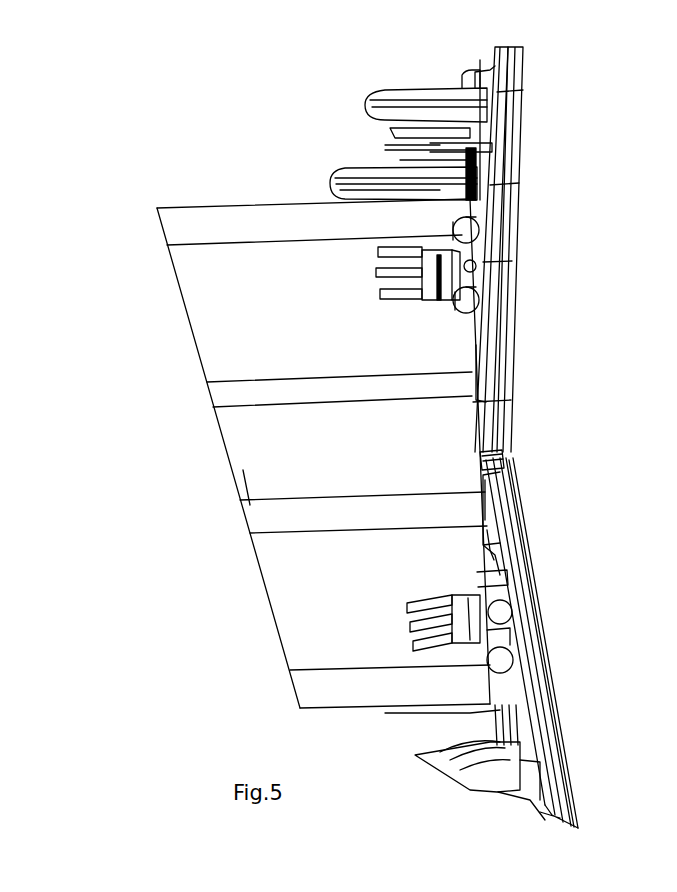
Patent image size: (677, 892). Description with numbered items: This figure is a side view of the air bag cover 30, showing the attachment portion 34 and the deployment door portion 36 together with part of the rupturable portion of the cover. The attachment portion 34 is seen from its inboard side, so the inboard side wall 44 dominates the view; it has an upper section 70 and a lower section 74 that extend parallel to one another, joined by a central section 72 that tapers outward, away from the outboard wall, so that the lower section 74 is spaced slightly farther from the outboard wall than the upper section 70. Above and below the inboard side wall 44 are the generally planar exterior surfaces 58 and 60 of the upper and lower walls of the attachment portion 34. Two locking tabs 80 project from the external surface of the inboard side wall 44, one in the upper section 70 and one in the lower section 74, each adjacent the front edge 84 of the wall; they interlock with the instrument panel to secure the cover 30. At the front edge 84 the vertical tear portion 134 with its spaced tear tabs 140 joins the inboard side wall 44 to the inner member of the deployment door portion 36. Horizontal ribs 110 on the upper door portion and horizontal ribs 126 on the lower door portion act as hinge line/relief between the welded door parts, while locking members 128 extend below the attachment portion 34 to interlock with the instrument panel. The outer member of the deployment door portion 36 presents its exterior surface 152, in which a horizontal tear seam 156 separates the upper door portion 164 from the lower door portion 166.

The cover 30 is at (250, 155).
The attachment portion 34 is at (214, 200).
The deployment door portion 36 is at (528, 126).
The inboard side wall 44 is at (262, 472).
The exterior surface 58 is at (303, 203).
The exterior surface 60 is at (337, 712).
The upper section 70 is at (253, 310).
The central section 72 is at (277, 430).
The lower section 74 is at (303, 603).
The locking tab 80 is at (428, 287).
The front edge 84 is at (488, 540).
The horizontal rib 110 is at (455, 240).
The horizontal rib 126 is at (495, 620).
The locking member 128 is at (488, 765).
The vertical tear portion 134 is at (480, 500).
The tear tab 140 is at (478, 350).
The exterior surface 152 is at (530, 625).
The tear seam 156 is at (518, 468).
The upper door portion 164 is at (512, 218).
The lower door portion 166 is at (556, 652).